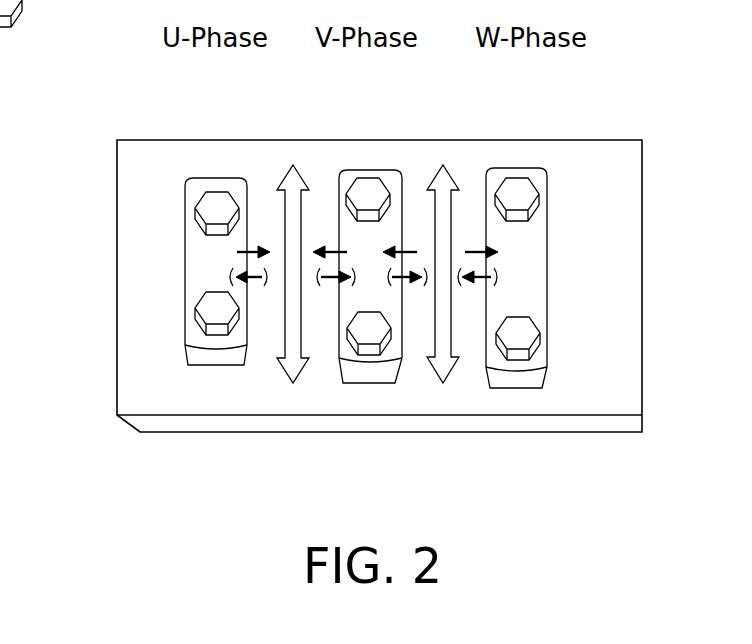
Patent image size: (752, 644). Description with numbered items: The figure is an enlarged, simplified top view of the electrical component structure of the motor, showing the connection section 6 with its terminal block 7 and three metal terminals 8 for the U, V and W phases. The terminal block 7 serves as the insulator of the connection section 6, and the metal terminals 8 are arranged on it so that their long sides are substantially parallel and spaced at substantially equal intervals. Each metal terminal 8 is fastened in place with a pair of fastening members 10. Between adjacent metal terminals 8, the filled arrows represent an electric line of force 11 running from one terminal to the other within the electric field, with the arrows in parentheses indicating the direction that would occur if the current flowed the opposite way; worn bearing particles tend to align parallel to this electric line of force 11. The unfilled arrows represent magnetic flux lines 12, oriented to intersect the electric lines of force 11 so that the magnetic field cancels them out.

The connection section 6 is at (565, 134).
The terminal block 7 is at (613, 148).
The metal terminal 8 is at (198, 268).
The fastening member 10 is at (210, 211).
The electric line of force 11 is at (253, 250).
The magnetic flux line 12 is at (285, 327).